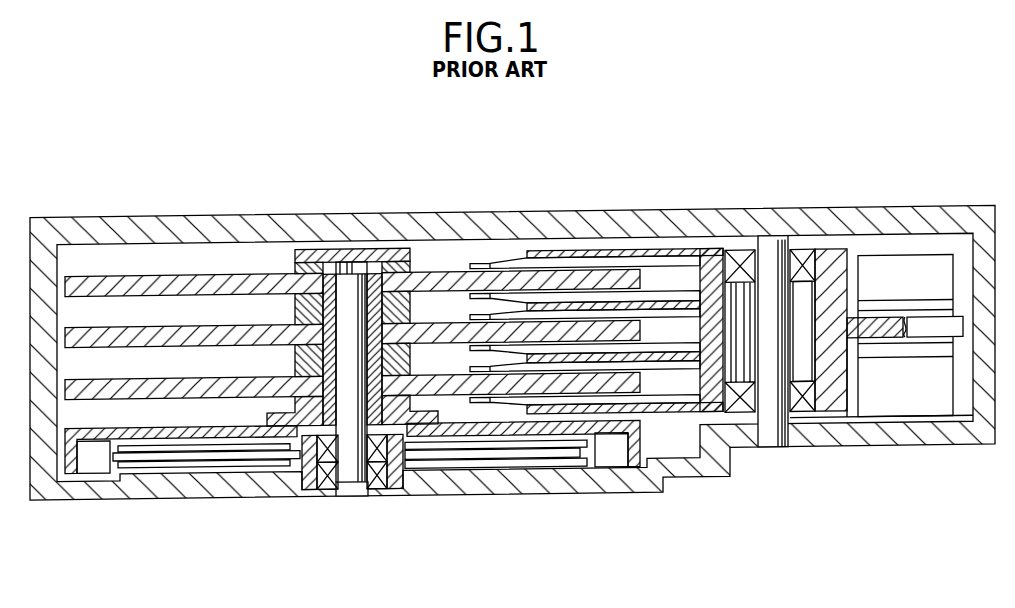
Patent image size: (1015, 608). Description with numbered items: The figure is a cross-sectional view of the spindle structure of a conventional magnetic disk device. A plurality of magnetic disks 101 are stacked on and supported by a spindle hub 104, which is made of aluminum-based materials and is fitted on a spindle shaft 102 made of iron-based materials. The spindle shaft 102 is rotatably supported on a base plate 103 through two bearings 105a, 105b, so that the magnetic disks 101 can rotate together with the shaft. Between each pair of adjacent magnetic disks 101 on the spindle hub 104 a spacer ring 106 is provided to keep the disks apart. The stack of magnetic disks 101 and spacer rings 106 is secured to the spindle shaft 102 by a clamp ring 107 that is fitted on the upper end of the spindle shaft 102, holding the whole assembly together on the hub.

The magnetic disks 101 is at (155, 271).
The spindle shaft 102 is at (345, 478).
The base plate 103 is at (110, 488).
The spindle hub 104 is at (328, 257).
The bearing 105a is at (375, 481).
The bearing 105b is at (318, 450).
The spacer rings 106 is at (413, 305).
The clamp ring 107 is at (355, 253).